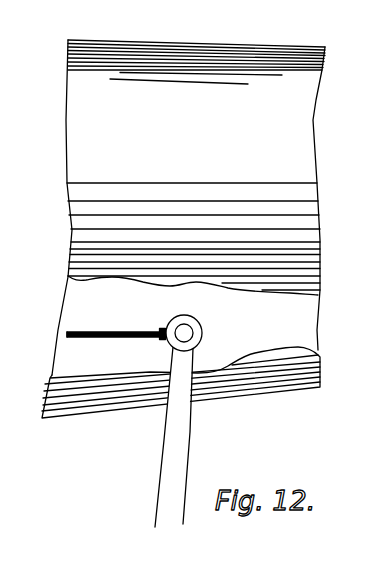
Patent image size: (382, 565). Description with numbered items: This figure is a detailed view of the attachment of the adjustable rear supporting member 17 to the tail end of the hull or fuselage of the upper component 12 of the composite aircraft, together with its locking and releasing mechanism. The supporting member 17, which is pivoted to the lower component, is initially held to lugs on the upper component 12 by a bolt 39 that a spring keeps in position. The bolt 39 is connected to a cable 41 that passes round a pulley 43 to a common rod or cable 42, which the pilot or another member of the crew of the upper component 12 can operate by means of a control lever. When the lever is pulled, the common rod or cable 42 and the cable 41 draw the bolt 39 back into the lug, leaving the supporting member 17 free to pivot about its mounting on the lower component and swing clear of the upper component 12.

The upper component 12 is at (180, 63).
The rear supporting member 17 is at (176, 450).
The bolt 39 is at (184, 333).
The cable 41 is at (105, 330).
The common rod or cable 42 is at (67, 338).
The pulley 43 is at (161, 340).